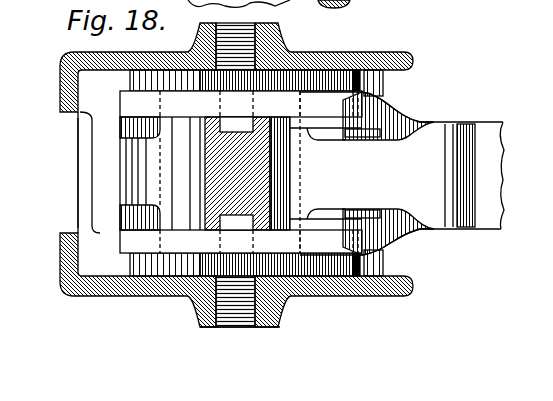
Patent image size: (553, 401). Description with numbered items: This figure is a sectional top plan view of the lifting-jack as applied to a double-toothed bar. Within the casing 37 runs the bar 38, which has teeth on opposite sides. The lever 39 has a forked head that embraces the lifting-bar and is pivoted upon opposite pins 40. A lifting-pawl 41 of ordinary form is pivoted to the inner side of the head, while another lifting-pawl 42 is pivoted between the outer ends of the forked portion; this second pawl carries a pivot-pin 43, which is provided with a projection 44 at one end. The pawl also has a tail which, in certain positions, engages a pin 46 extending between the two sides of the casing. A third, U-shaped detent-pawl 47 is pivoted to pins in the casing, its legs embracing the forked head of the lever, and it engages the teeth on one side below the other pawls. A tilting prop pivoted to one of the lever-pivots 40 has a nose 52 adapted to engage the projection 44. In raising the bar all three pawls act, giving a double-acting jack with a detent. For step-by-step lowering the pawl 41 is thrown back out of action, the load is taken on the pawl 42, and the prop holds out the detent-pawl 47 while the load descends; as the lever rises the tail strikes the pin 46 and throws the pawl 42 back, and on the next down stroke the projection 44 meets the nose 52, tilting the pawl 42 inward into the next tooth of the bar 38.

The casing 37 is at (72, 111).
The bar 38 is at (247, 173).
The lever 39 is at (120, 100).
The pins 40 is at (243, 124).
The lifting-pawl 41 is at (397, 173).
The lifting-pawl 42 is at (160, 173).
The pivot-pin 43 is at (118, 193).
The projection 44 is at (163, 283).
The pin 46 is at (175, 80).
The detent-pawl 47 is at (291, 79).
The nose 52 is at (198, 292).